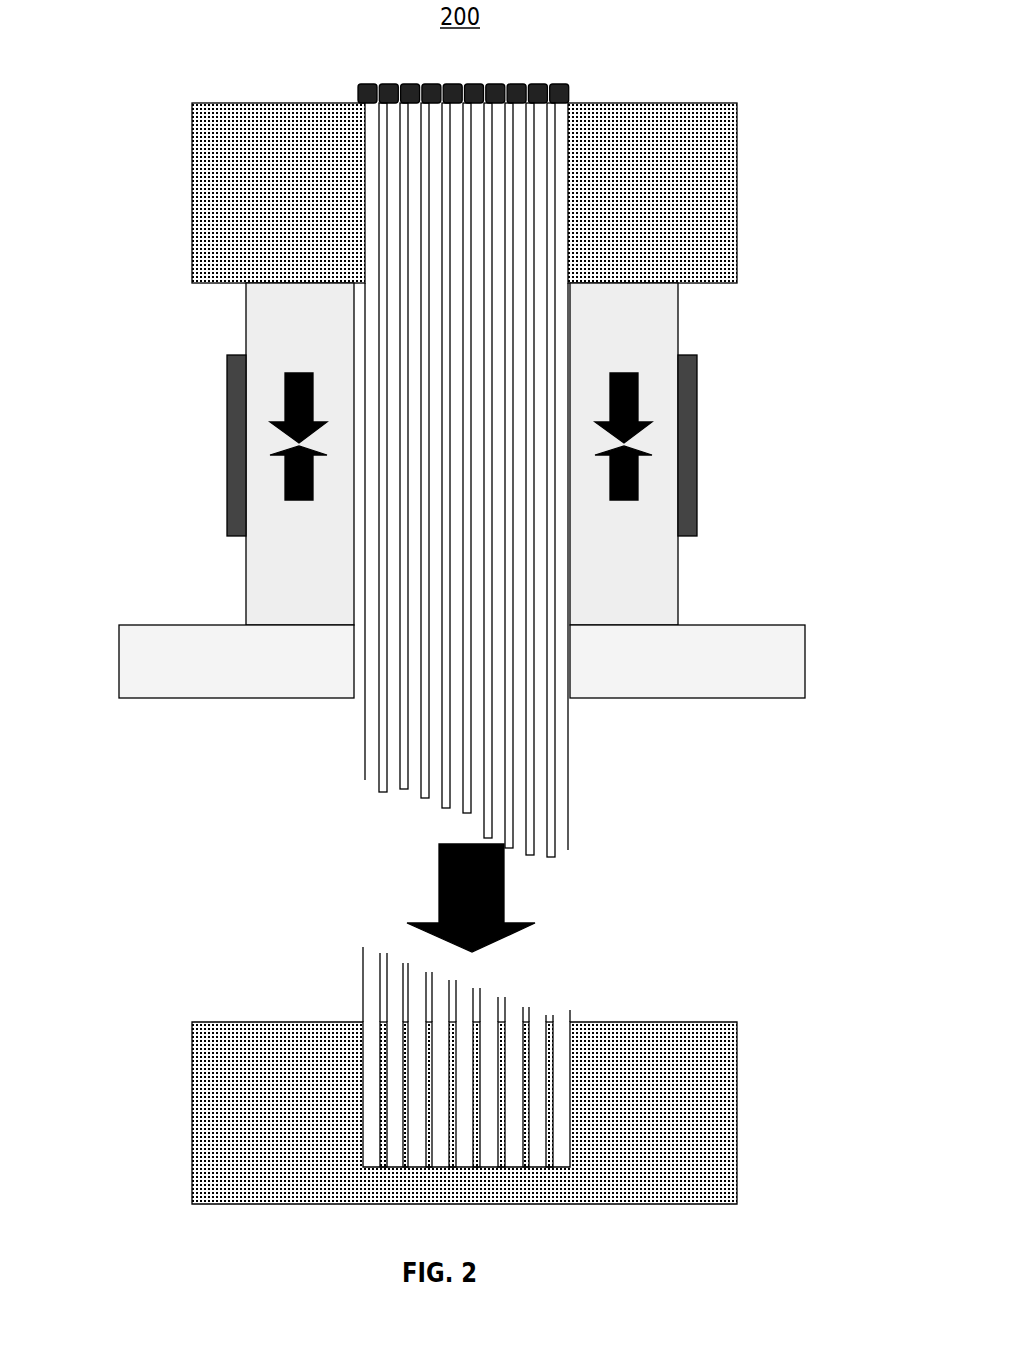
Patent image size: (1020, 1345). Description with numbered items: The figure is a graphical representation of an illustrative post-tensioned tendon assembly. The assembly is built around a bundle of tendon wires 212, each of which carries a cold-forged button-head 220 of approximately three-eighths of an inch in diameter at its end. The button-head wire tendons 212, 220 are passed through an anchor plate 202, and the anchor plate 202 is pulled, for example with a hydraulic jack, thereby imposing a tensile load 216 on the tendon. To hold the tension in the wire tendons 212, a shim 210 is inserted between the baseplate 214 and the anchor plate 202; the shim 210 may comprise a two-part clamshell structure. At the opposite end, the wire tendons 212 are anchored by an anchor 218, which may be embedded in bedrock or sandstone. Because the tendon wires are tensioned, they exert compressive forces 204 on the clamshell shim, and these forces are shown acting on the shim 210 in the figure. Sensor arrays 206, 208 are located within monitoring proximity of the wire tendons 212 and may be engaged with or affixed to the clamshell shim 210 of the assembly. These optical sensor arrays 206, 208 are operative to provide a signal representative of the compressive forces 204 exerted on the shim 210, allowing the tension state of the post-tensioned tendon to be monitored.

The anchor plate 202 is at (737, 206).
The compressive forces 204 is at (610, 385).
The sensor array 206 is at (227, 425).
The sensor array 208 is at (697, 463).
The shim 210 is at (246, 572).
The tendon wires 212 is at (360, 762).
The baseplate 214 is at (733, 692).
The tensile load 216 is at (517, 913).
The anchor 218 is at (737, 1085).
The button-head 220 is at (573, 85).